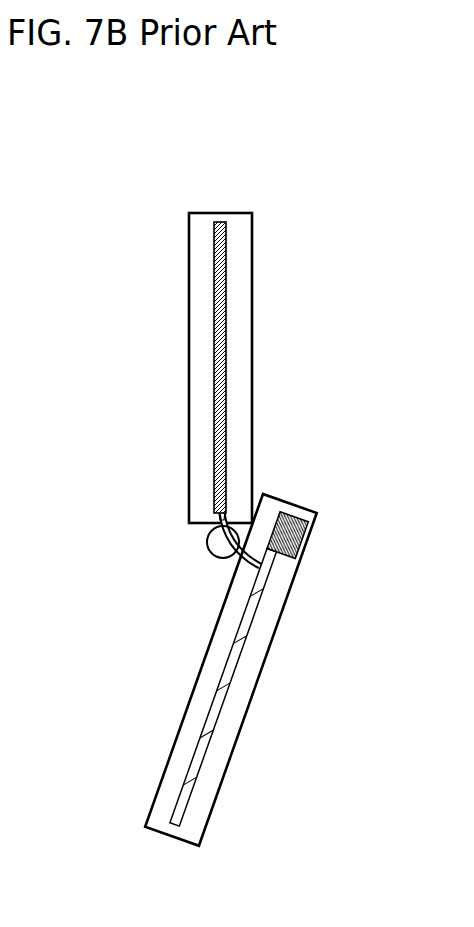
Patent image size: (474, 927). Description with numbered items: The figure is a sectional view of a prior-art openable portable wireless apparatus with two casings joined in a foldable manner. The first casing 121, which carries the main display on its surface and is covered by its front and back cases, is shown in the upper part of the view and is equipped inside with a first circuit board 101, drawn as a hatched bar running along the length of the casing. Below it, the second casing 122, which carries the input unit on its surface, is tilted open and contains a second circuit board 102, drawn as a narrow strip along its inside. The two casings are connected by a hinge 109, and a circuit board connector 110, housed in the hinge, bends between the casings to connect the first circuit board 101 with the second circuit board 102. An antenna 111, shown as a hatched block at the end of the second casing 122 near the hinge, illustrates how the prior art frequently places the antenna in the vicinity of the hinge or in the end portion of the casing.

The first circuit board 101 is at (221, 227).
The second circuit board 102 is at (202, 747).
The hinge 109 is at (10, 537).
The circuit board connector 110 is at (222, 544).
The antenna 111 is at (305, 548).
The first casing 121 is at (320, 202).
The second casing 122 is at (269, 682).